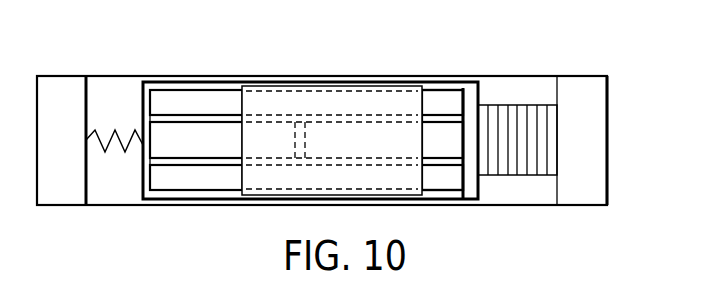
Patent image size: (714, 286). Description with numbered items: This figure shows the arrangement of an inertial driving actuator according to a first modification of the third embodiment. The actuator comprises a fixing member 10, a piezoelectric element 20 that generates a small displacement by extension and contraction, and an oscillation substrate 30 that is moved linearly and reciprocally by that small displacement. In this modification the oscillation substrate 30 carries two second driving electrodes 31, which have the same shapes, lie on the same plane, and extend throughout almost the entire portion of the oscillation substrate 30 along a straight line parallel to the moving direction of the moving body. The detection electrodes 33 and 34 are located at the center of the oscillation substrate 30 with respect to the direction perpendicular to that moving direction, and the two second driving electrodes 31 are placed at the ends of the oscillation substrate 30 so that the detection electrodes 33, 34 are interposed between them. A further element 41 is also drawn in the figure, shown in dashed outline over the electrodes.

The fixing member 10 is at (60, 88).
The piezoelectric element 20 is at (530, 140).
The oscillation substrate 30 is at (470, 88).
The second driving electrodes 31 is at (213, 103).
The detection electrode 33 is at (443, 132).
The detection electrode 34 is at (178, 132).
The magnet 41 is at (238, 100).